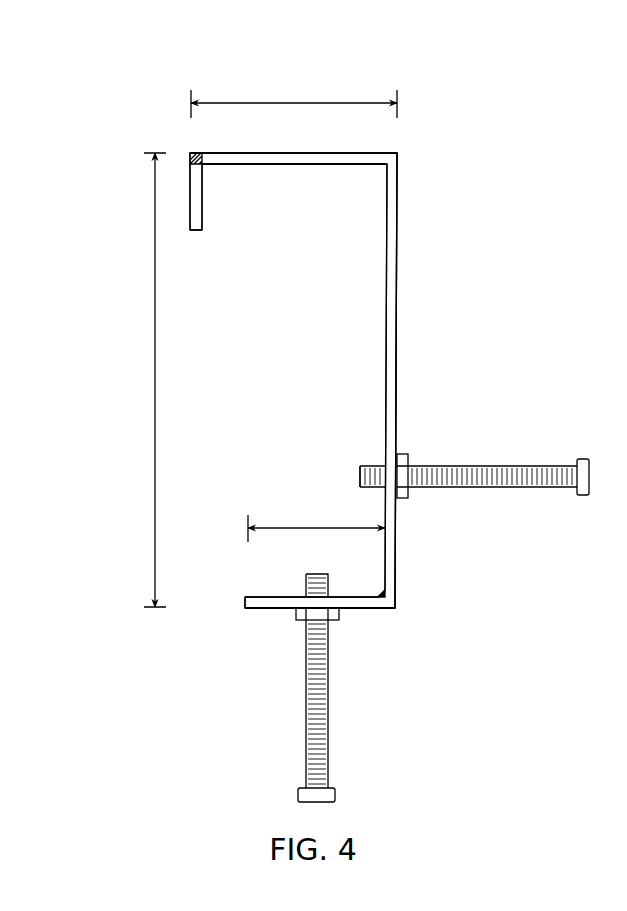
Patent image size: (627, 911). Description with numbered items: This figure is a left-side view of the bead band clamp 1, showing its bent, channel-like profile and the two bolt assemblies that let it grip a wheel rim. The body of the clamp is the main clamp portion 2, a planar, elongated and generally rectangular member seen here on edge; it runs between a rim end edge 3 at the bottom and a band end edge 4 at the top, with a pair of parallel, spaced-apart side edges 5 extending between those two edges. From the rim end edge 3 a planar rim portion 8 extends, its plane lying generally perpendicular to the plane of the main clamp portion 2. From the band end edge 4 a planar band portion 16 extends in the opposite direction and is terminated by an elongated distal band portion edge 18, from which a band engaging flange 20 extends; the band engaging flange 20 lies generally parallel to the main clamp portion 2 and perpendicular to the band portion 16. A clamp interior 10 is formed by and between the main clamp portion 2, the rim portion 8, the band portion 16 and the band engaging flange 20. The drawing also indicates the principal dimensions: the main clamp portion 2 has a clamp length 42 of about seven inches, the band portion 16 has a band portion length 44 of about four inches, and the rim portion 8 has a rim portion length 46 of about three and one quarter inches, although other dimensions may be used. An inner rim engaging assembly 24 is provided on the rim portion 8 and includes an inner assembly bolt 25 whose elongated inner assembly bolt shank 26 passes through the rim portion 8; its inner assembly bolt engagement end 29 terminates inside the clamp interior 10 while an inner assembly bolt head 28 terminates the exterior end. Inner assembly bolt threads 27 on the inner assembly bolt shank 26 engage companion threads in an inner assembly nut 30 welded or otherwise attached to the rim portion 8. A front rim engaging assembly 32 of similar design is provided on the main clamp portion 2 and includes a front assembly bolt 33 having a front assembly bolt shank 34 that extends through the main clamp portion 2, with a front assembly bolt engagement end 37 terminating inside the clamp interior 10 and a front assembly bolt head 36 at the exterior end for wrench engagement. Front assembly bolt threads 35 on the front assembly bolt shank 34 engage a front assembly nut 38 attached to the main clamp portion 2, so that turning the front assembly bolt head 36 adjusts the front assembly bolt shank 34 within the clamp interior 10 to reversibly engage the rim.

The bead band clamp 1 is at (432, 150).
The main clamp portion 2 is at (434, 242).
The rim end edge 3 is at (405, 608).
The band end edge 4 is at (397, 150).
The side edges 5 is at (398, 278).
The rim portion 8 is at (358, 610).
The clamp interior 10 is at (232, 507).
The band portion 16 is at (290, 166).
The distal band portion edge 18 is at (190, 152).
The band engaging flange 20 is at (204, 187).
The inner rim engaging assembly 24 is at (328, 680).
The inner assembly bolt 25 is at (328, 680).
The inner assembly bolt shank 26 is at (319, 704).
The inner assembly bolt threads 27 is at (306, 695).
The inner assembly bolt head 28 is at (298, 795).
The inner assembly bolt engagement end 29 is at (313, 575).
The inner assembly nut 30 is at (296, 613).
The front rim engaging assembly 32 is at (449, 472).
The front assembly bolt 33 is at (449, 488).
The front assembly bolt shank 34 is at (468, 487).
The front assembly bolt threads 35 is at (483, 489).
The front assembly bolt head 36 is at (582, 459).
The front assembly bolt engagement end 37 is at (360, 470).
The front assembly nut 38 is at (402, 454).
The clamp length 42 is at (155, 350).
The band portion length 44 is at (302, 103).
The rim portion length 46 is at (272, 525).